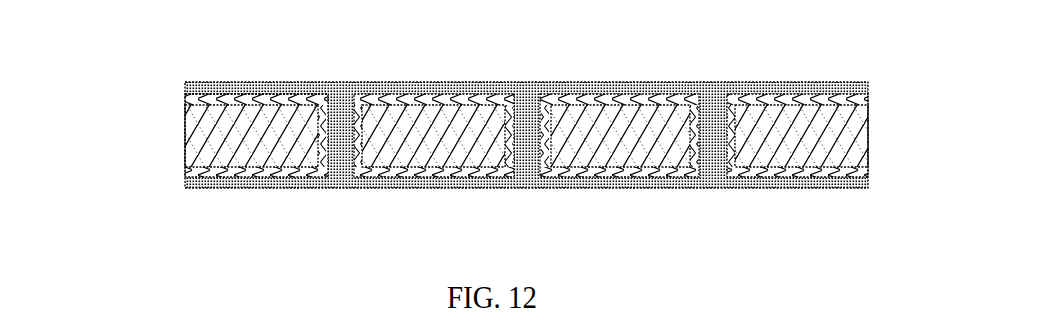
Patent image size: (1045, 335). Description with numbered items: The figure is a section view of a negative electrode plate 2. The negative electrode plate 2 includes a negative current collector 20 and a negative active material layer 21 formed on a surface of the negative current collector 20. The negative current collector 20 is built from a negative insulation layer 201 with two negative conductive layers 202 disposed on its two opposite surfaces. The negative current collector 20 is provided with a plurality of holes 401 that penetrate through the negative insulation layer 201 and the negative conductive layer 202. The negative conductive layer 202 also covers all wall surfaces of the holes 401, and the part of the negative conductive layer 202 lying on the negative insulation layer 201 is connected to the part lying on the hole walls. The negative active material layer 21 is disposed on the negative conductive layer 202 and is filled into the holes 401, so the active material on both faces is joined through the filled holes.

The negative electrode plate 2 is at (486, 104).
The negative current collector 20 is at (625, 97).
The negative active material layer 21 is at (712, 93).
The negative insulation layer 201 is at (216, 108).
The negative conductive layer 202 is at (230, 93).
The holes 401 is at (342, 101).